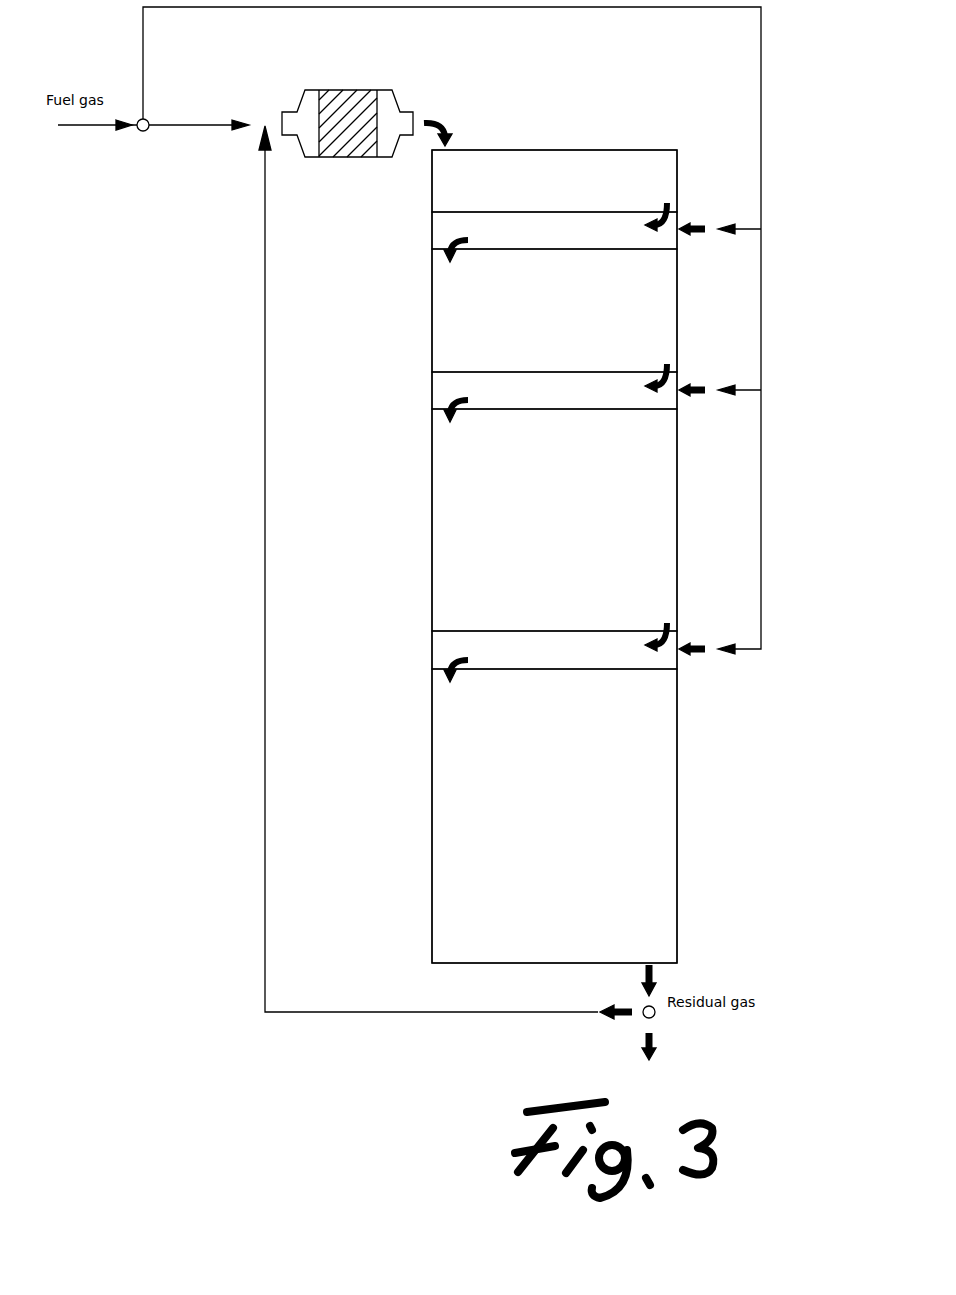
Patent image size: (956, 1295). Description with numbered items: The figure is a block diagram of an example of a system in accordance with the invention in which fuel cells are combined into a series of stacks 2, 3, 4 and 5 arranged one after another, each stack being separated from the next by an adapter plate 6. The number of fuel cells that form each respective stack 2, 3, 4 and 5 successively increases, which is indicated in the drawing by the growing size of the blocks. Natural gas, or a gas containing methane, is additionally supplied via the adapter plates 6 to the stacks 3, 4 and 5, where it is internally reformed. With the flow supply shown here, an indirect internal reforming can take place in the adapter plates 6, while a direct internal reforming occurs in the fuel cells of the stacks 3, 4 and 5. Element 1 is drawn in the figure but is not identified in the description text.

The reactor 1 is at (393, 84).
The stack 2 is at (590, 190).
The stack 3 is at (548, 345).
The stack 4 is at (558, 544).
The stack 5 is at (535, 803).
The adapter plate 6 is at (404, 658).